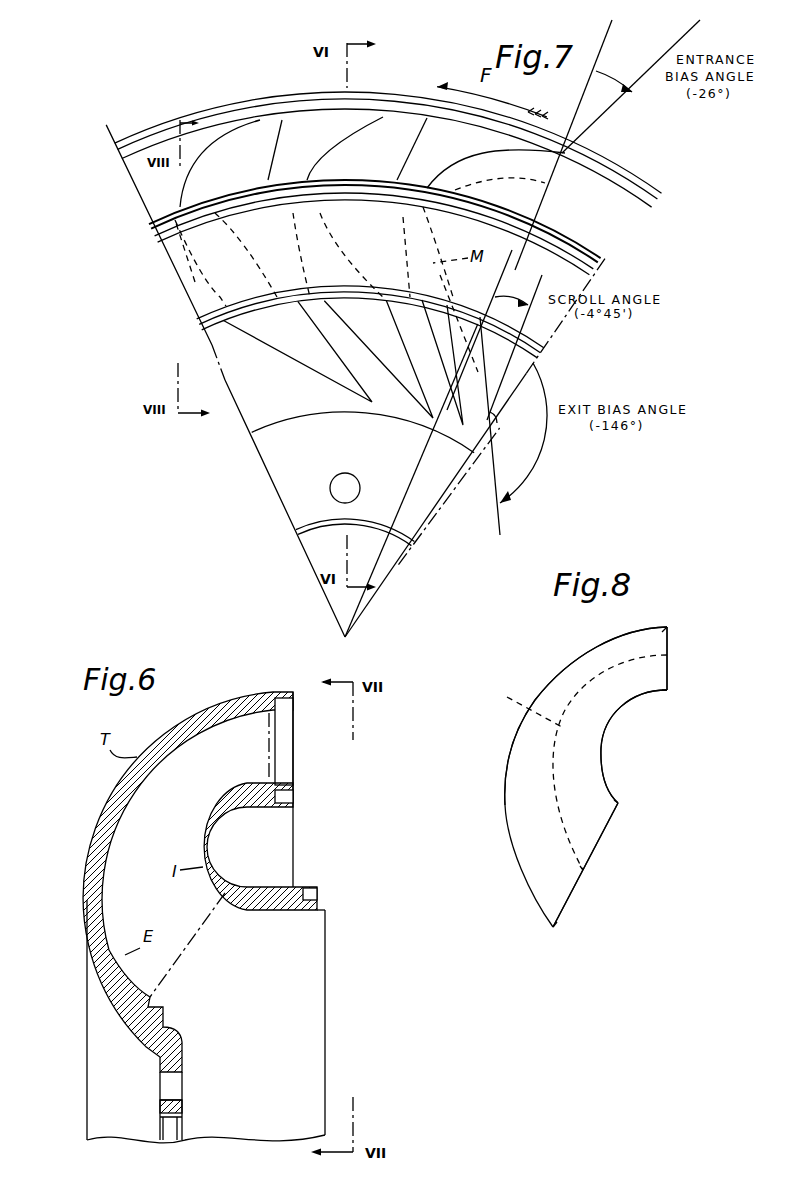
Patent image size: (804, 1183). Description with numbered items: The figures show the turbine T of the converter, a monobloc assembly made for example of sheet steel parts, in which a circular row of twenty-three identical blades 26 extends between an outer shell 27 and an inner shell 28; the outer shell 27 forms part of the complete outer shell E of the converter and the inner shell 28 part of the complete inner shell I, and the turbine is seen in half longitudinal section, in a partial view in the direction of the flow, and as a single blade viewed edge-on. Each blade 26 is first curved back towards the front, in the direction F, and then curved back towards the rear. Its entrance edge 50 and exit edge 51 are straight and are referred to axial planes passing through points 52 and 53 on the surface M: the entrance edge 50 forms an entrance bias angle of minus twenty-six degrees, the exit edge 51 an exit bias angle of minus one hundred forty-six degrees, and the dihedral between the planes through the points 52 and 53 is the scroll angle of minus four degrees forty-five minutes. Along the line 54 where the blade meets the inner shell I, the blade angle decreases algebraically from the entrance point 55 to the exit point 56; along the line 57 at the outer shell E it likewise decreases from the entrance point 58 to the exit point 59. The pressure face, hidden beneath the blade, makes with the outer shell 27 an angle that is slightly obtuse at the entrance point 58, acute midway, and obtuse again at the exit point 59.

In FIG. 7, the blade 26 is at (328, 370).
In FIG. 8, the blade 26 is at (512, 846).
In FIG. 6, the outer shell 27 is at (98, 822).
In FIG. 6, the inner shell 28 is at (207, 848).
In FIG. 7, the entrance edge 50 is at (545, 181).
In FIG. 8, the entrance edge 50 is at (667, 673).
In FIG. 7, the exit edge 51 is at (497, 421).
In FIG. 8, the exit edge 51 is at (600, 840).
In FIG. 7, the point 52 is at (543, 184).
In FIG. 8, the point 52 is at (668, 655).
In FIG. 7, the point 53 is at (486, 378).
In FIG. 8, the point 53 is at (585, 870).
In FIG. 7, the line 54 is at (220, 267).
In FIG. 8, the line 54 is at (602, 740).
In FIG. 8, the entrance point 55 is at (667, 690).
In FIG. 8, the exit point 56 is at (620, 803).
In FIG. 7, the line 57 is at (195, 282).
In FIG. 8, the line 57 is at (510, 748).
In FIG. 8, the entrance point 58 is at (667, 627).
In FIG. 8, the exit point 59 is at (553, 927).